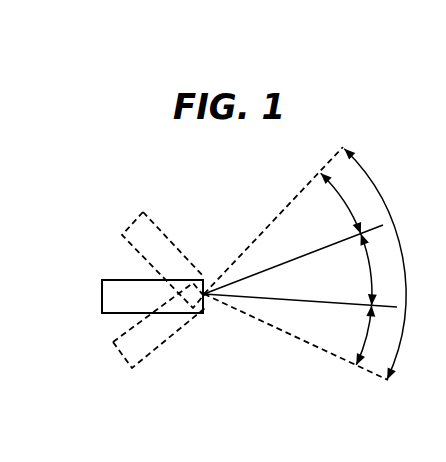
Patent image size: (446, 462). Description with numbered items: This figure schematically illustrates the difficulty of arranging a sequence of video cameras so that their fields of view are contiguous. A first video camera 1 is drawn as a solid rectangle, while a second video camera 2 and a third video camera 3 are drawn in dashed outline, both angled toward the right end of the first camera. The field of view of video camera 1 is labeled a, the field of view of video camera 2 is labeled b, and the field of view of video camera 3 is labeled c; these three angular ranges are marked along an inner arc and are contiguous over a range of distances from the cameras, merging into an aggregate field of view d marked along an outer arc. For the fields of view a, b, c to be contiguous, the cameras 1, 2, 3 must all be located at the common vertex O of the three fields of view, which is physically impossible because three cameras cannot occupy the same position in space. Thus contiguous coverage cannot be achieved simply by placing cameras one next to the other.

The video camera 1 is at (102, 303).
The video camera 2 is at (168, 340).
The video camera 3 is at (143, 213).
The common vertex O is at (206, 292).
The field of view a is at (363, 270).
The field of view b is at (341, 203).
The field of view c is at (362, 335).
The aggregate field of view d is at (375, 264).